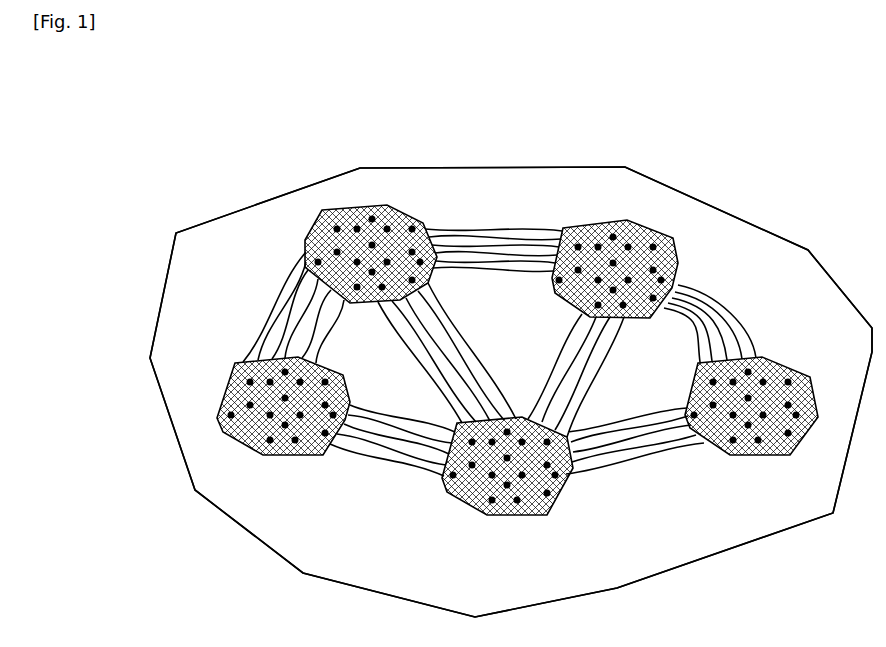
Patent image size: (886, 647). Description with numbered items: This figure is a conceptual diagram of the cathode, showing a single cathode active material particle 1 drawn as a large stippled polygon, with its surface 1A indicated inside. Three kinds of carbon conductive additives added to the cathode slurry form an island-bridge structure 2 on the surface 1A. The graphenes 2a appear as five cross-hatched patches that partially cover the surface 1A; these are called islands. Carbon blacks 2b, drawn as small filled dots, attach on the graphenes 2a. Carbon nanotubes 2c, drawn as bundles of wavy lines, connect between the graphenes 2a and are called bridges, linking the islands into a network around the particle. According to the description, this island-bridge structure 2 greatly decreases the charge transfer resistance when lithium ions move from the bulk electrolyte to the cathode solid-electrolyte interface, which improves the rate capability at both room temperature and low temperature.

The cathode active material particle 1 is at (728, 212).
The surface 1A is at (632, 498).
The island-bridge structure 2 is at (448, 317).
The graphene 2a is at (308, 242).
The carbon black 2b is at (362, 213).
The carbon nanotube 2c is at (265, 310).